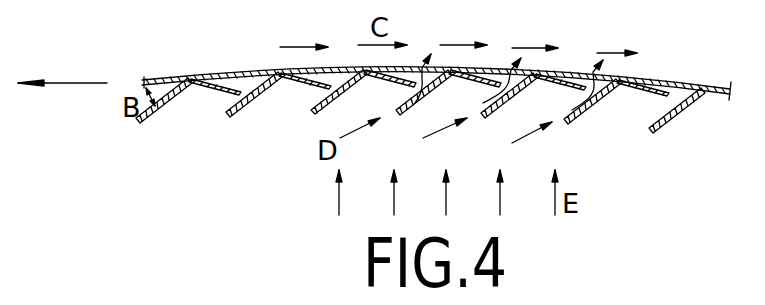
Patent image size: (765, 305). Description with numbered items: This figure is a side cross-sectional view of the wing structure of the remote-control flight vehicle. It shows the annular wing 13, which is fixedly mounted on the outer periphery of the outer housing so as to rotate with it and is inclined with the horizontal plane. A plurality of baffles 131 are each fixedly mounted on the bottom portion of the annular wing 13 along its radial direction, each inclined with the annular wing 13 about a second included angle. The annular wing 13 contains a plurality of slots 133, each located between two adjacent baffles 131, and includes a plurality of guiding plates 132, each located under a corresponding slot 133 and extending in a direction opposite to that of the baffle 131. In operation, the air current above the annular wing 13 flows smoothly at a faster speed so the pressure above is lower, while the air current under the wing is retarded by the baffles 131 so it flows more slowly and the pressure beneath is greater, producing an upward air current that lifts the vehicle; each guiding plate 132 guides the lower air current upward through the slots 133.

The annular wing 13 is at (434, 54).
The baffle 131 is at (172, 98).
The guiding plate 132 is at (217, 92).
The slot 133 is at (233, 72).